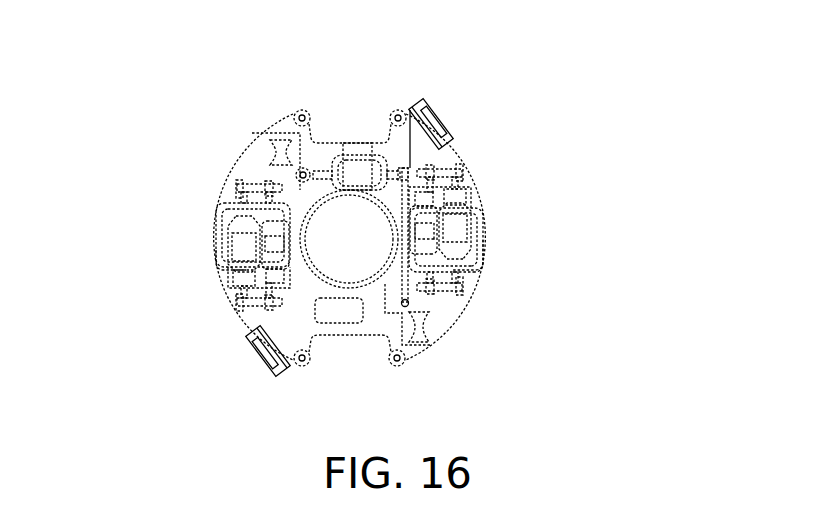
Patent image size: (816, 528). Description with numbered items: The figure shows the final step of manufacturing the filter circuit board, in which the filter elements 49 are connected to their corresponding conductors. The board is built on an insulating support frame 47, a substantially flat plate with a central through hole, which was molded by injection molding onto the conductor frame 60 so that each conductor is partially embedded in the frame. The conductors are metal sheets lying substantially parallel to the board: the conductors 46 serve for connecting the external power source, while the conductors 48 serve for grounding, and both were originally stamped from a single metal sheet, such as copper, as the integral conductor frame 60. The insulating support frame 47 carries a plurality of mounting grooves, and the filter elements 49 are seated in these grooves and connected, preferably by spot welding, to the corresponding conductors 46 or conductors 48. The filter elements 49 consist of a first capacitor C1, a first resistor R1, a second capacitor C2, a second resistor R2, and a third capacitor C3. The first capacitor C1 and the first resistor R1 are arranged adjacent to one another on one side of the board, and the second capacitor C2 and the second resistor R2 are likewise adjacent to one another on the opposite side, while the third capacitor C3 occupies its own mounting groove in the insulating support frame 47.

The conductor for connecting the external power source 46 is at (268, 172).
The insulating support frame 47 is at (470, 265).
The conductor for grounding 48 is at (433, 153).
The filter element 49 is at (232, 270).
The conductor frame 60 is at (475, 182).
The first capacitor C1 is at (238, 247).
The second capacitor C2 is at (458, 213).
The third capacitor C3 is at (357, 168).
The first resistor R1 is at (280, 243).
The second resistor R2 is at (428, 230).